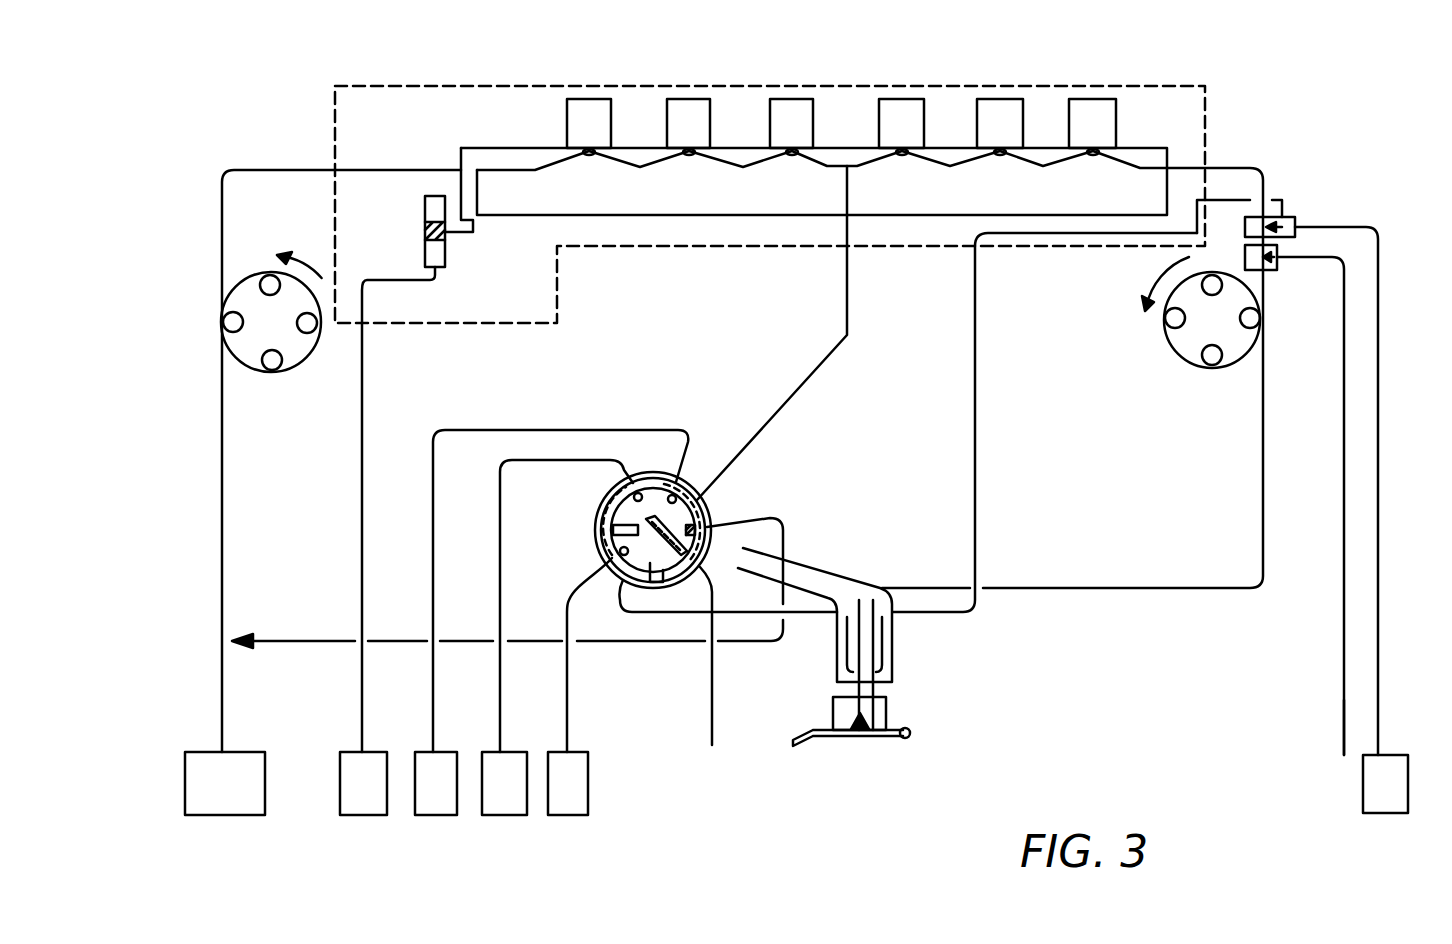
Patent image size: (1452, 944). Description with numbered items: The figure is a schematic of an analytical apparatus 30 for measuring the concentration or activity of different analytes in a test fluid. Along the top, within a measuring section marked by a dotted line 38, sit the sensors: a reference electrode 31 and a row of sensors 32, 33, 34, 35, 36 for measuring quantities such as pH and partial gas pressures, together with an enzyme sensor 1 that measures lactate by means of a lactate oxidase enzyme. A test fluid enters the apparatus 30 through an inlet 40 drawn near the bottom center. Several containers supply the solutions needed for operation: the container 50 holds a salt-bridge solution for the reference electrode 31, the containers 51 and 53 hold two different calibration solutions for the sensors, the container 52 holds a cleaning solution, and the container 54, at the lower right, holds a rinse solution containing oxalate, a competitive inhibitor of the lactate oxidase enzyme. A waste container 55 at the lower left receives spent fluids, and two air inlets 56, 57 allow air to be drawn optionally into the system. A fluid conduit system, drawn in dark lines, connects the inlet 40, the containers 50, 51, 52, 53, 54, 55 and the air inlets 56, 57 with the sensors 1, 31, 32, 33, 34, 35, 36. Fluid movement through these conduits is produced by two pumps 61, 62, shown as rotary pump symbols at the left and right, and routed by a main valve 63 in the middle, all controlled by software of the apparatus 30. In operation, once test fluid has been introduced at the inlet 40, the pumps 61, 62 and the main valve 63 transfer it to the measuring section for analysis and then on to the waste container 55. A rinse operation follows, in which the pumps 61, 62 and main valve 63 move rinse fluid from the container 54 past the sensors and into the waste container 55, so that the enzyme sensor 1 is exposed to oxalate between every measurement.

The enzyme sensor 1 is at (1088, 110).
The apparatus 30 is at (1286, 129).
The reference electrode 31 is at (425, 232).
The sensor 32 is at (590, 110).
The sensor 33 is at (687, 110).
The sensor 34 is at (785, 110).
The sensor 35 is at (897, 110).
The sensor 36 is at (997, 110).
The dotted line 38 is at (1208, 90).
The inlet 40 is at (868, 735).
The container 50 is at (370, 815).
The container 51 is at (440, 815).
The container 52 is at (508, 815).
The container 53 is at (572, 815).
The container 54 is at (1362, 795).
The waste container 55 is at (232, 815).
The air inlet 56 is at (712, 745).
The air inlet 57 is at (1342, 738).
The pump 61 is at (247, 340).
The pump 62 is at (1190, 343).
The main valve 63 is at (693, 517).